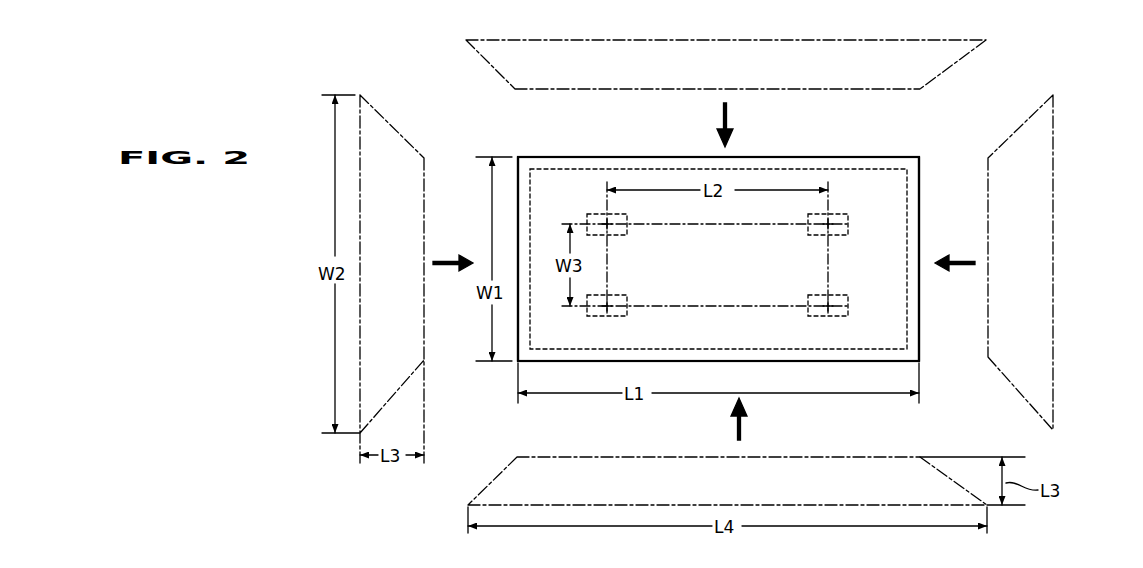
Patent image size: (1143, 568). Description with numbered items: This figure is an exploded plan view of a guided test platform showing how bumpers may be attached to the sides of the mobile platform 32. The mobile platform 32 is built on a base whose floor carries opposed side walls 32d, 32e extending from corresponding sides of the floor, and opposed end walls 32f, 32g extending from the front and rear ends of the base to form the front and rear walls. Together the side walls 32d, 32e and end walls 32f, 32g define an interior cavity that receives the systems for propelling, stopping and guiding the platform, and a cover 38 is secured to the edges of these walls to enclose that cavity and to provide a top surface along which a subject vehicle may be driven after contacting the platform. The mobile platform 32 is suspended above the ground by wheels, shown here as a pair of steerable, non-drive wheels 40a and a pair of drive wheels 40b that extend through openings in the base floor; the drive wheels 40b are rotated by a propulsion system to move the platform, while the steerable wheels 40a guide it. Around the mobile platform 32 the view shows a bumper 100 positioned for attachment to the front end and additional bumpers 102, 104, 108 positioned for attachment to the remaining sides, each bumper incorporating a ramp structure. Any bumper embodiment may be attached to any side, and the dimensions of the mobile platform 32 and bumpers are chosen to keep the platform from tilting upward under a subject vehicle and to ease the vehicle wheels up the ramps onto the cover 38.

The mobile platform 32 is at (781, 267).
The side wall 32d is at (778, 362).
The side wall 32e is at (773, 165).
The end wall 32f is at (518, 220).
The end wall 32g is at (912, 218).
The cover 38 is at (557, 203).
The steerable wheels 40a is at (630, 300).
The drive wheels 40b is at (815, 317).
The bumper 100 is at (375, 366).
The bumper 102 is at (1038, 364).
The bumper 104 is at (515, 483).
The bumper 108 is at (634, 50).